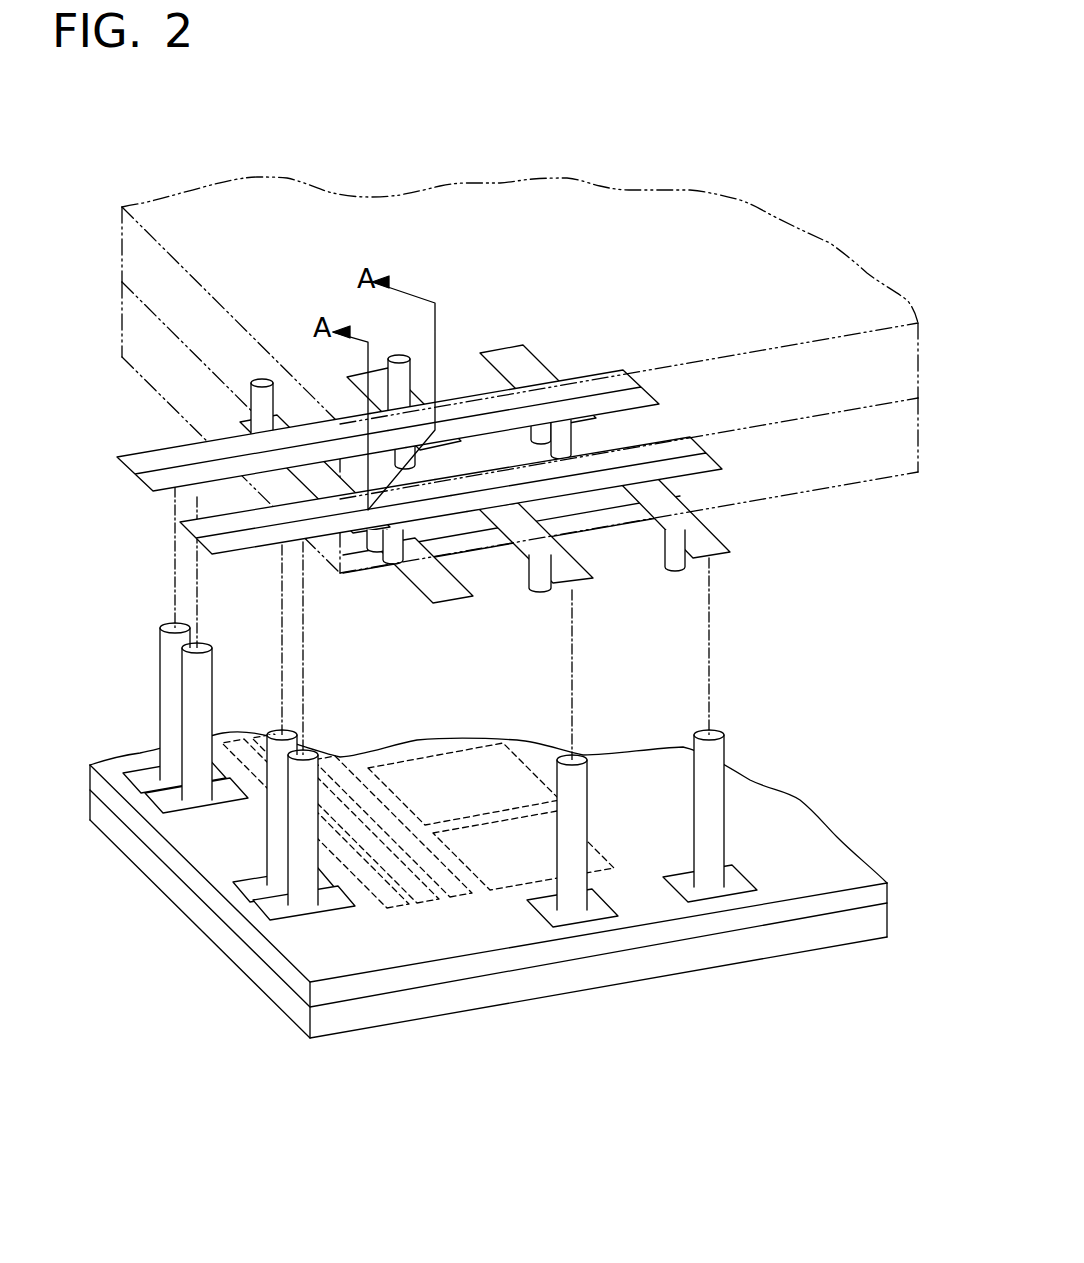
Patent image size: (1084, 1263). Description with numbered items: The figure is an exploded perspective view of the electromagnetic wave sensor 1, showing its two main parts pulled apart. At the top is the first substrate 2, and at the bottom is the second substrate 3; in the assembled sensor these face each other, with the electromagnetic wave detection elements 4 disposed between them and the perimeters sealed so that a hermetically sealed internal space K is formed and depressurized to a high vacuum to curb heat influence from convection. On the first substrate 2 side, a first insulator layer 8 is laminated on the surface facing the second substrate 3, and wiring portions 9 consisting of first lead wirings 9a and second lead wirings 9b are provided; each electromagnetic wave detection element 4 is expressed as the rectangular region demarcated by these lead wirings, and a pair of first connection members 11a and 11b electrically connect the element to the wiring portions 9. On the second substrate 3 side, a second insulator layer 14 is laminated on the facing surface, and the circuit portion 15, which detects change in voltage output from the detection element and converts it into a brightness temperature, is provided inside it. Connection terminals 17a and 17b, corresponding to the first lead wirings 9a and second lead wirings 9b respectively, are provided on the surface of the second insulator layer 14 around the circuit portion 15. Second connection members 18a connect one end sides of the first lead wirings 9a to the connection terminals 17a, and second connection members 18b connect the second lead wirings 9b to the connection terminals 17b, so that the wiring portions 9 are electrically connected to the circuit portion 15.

The electromagnetic wave sensor 1 is at (674, 136).
The first substrate 2 is at (883, 375).
The second substrate 3 is at (521, 885).
The electromagnetic wave detection element 4 is at (440, 598).
The first insulator layer 8 is at (883, 443).
The wiring portions 9 is at (444, 517).
The first lead wirings 9a is at (560, 567).
The second lead wirings 9b is at (220, 547).
The first connection member 11a is at (550, 568).
The first connection member 11b is at (390, 545).
The second insulator layer 14 is at (867, 897).
The circuit portion 15 is at (487, 898).
The connection terminals 17a is at (592, 912).
The connection terminals 17b is at (157, 797).
The second connection members 18a is at (577, 808).
The second connection members 18b is at (195, 688).
The internal space K is at (788, 680).